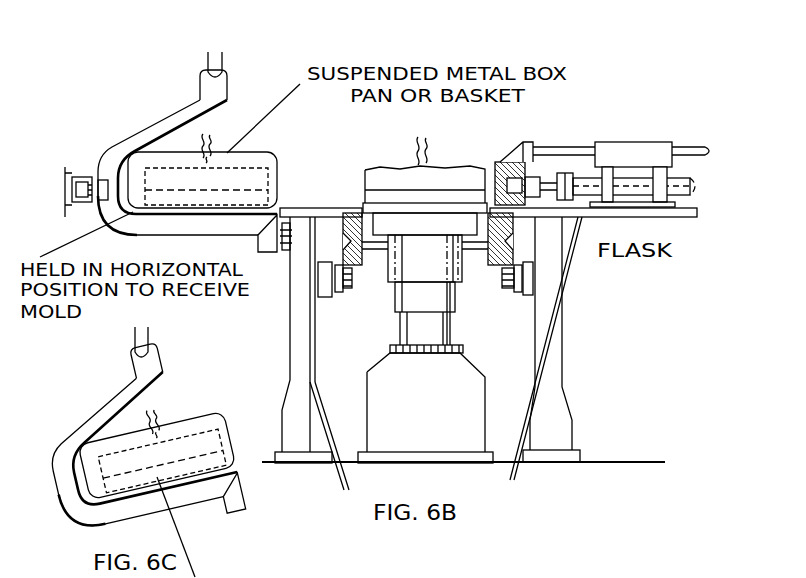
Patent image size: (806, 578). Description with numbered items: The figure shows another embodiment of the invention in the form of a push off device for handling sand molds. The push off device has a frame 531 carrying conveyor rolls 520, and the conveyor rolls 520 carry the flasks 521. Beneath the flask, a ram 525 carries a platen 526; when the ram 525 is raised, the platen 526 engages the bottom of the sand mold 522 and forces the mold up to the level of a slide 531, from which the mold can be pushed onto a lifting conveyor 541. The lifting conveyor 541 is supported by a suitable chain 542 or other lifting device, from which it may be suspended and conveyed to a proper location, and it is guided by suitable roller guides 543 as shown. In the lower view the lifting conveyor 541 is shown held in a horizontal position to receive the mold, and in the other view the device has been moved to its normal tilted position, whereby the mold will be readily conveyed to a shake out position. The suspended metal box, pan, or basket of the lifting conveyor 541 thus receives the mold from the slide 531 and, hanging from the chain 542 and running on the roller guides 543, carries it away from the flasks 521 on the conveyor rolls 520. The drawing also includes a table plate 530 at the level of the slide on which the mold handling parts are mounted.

In FIG. 6B, the conveyor rolls 520 is at (508, 275).
In FIG. 6B, the flasks 521 is at (508, 247).
In FIG. 6B, the sand mold 522 is at (463, 182).
In FIG. 6B, the ram 525 is at (437, 332).
In FIG. 6B, the platen 526 is at (398, 210).
In FIG. 6B, the table plate 530 is at (315, 217).
In FIG. 6B, the frame 531 is at (555, 333).
In FIG. 6B, the lifting conveyor 541 is at (182, 97).
In FIG. 6C, the lifting conveyor 541 is at (123, 372).
In FIG. 6B, the chain 542 is at (215, 51).
In FIG. 6C, the chain 542 is at (148, 335).
In FIG. 6B, the roller guides 543 is at (78, 177).